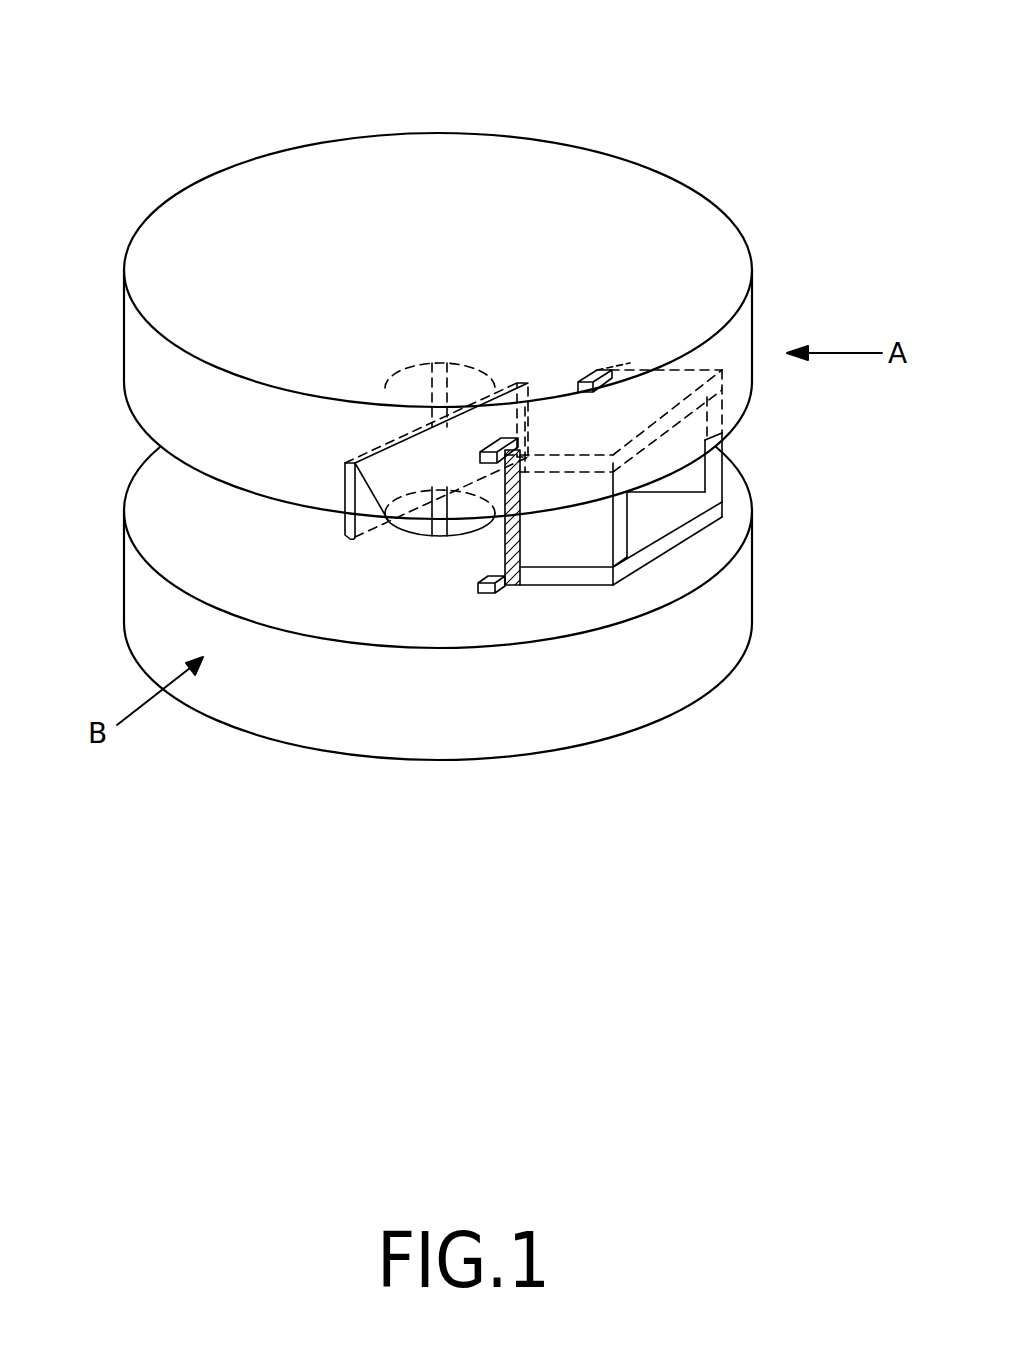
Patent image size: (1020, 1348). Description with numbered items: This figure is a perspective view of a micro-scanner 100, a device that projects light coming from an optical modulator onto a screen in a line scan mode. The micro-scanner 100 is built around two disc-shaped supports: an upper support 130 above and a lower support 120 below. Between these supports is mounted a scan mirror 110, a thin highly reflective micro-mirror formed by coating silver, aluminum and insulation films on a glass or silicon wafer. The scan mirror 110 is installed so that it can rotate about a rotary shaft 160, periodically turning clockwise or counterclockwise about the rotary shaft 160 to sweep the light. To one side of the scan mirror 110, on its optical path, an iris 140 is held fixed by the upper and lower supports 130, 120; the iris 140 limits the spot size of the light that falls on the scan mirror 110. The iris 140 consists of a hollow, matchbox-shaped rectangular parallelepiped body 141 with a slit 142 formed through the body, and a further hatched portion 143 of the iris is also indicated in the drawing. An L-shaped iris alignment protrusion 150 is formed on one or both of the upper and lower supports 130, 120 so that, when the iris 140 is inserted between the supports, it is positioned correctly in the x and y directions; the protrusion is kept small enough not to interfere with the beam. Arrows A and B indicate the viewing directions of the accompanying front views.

The micro-scanner 100 is at (470, 435).
The scan mirror 110 is at (345, 483).
The lower support 120 is at (740, 507).
The upper support 130 is at (733, 242).
The iris 140 is at (686, 610).
The body 141 is at (690, 525).
The slit 142 is at (645, 525).
The connector post 143 is at (512, 585).
The iris alignment protrusion 150 is at (488, 595).
The rotary shaft 160 is at (418, 537).